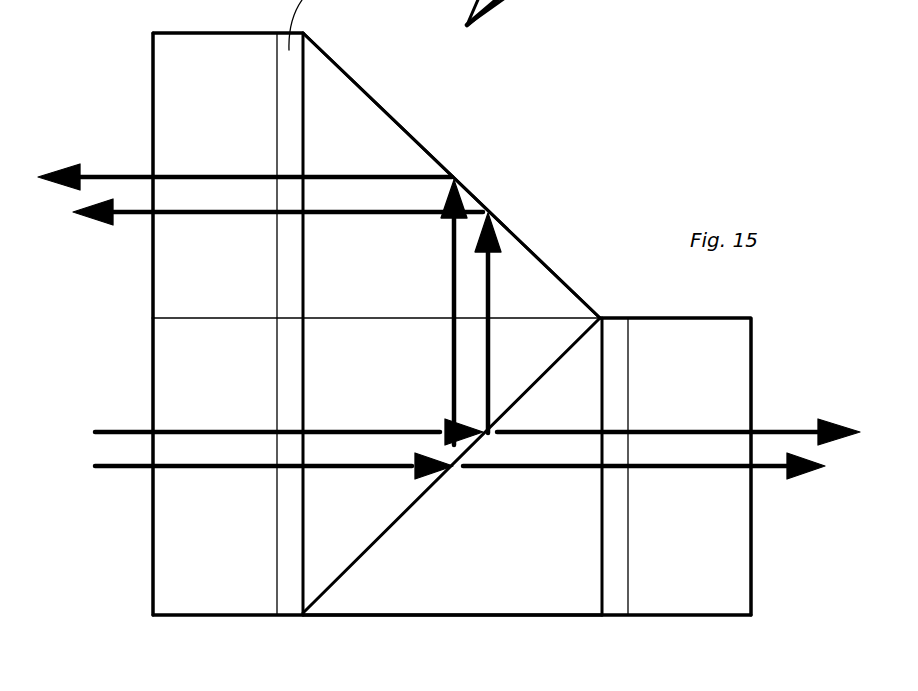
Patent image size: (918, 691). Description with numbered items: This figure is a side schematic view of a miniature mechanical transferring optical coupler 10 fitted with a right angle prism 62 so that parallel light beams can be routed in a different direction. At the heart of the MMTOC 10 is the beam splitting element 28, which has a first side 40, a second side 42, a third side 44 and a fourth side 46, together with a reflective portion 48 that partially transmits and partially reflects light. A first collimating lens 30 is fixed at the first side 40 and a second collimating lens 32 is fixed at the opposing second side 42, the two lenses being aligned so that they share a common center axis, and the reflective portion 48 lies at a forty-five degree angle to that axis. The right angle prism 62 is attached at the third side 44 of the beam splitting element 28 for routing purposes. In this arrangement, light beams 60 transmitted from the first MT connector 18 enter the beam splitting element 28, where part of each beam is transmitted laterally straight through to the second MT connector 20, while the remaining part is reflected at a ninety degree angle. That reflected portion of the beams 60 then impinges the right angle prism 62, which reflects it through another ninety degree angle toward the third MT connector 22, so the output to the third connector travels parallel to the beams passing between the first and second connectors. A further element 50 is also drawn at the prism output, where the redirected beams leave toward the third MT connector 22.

The miniature mechanical transferring optical coupler 10 is at (612, 160).
The first MT connector 18 is at (170, 558).
The second MT connector 20 is at (725, 380).
The third MT connector 22 is at (180, 105).
The beam splitting element 28 is at (500, 582).
The first collimating lens 30 is at (290, 605).
The second collimating lens 32 is at (613, 600).
The first side 40 is at (305, 365).
The second side 42 is at (602, 390).
The third side 44 is at (388, 318).
The fourth side 46 is at (415, 618).
The reflective portion 48 is at (345, 582).
The reflected output light beams 50 is at (279, 222).
The light beams 60 is at (128, 428).
The right angle prism 62 is at (350, 105).